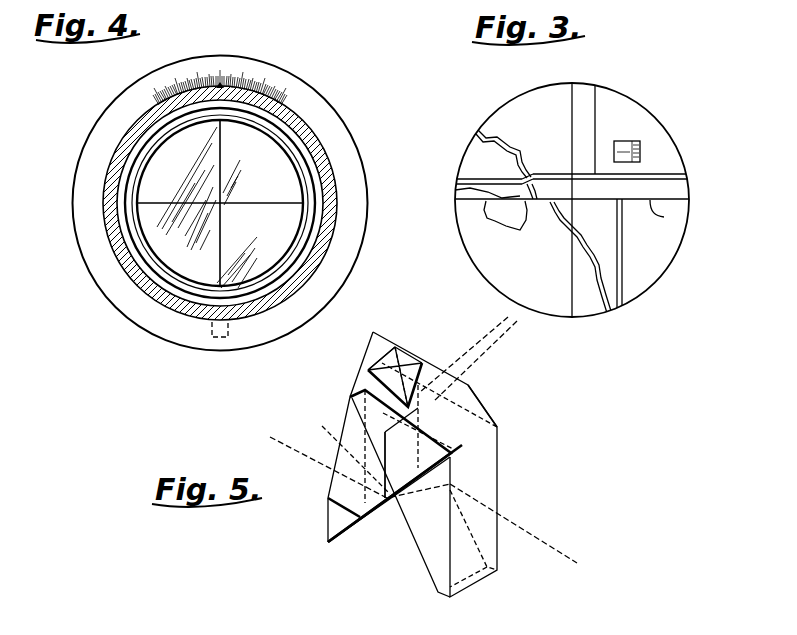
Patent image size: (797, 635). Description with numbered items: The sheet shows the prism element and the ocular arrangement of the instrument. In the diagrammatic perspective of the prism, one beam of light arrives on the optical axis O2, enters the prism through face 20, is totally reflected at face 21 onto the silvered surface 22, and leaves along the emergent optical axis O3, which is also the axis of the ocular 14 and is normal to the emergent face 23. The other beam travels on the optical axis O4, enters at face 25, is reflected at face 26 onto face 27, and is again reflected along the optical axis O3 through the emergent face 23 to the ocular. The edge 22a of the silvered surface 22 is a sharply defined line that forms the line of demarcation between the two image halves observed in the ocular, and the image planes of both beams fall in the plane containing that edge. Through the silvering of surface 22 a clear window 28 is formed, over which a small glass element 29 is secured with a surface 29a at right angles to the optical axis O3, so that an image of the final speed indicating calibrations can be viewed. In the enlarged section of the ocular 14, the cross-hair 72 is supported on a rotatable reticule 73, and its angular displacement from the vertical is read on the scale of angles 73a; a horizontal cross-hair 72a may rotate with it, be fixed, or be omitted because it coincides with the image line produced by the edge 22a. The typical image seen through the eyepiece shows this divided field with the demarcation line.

In FIG. 4, the ocular 14 is at (113, 132).
In FIG. 4, the cross-hair 72 is at (238, 146).
In FIG. 4, the horizontal cross-hair 72a is at (247, 203).
In FIG. 4, the rotatable reticule 73 is at (316, 193).
In FIG. 4, the scale of angles 73a is at (294, 86).
In FIG. 3, the edge of silvered surface 22a is at (664, 217).
In FIG. 5, the edge of silvered surface 22a is at (383, 413).
In FIG. 5, the entrance face 20 is at (412, 464).
In FIG. 5, the reflecting face 21 is at (436, 556).
In FIG. 5, the silvered surface 22 is at (389, 466).
In FIG. 5, the emergent face 23 is at (481, 406).
In FIG. 5, the entrance face for second beam 25 is at (343, 453).
In FIG. 5, the reflecting face 26 is at (378, 512).
In FIG. 5, the reflecting face 27 is at (398, 465).
In FIG. 5, the clear window 28 is at (399, 368).
In FIG. 5, the glass element 29 is at (383, 362).
In FIG. 5, the surface of glass element 29a is at (370, 381).
In FIG. 5, the optical axis O2 is at (545, 510).
In FIG. 5, the emergent optical axis O3 is at (481, 345).
In FIG. 5, the optical axis O4 is at (322, 470).